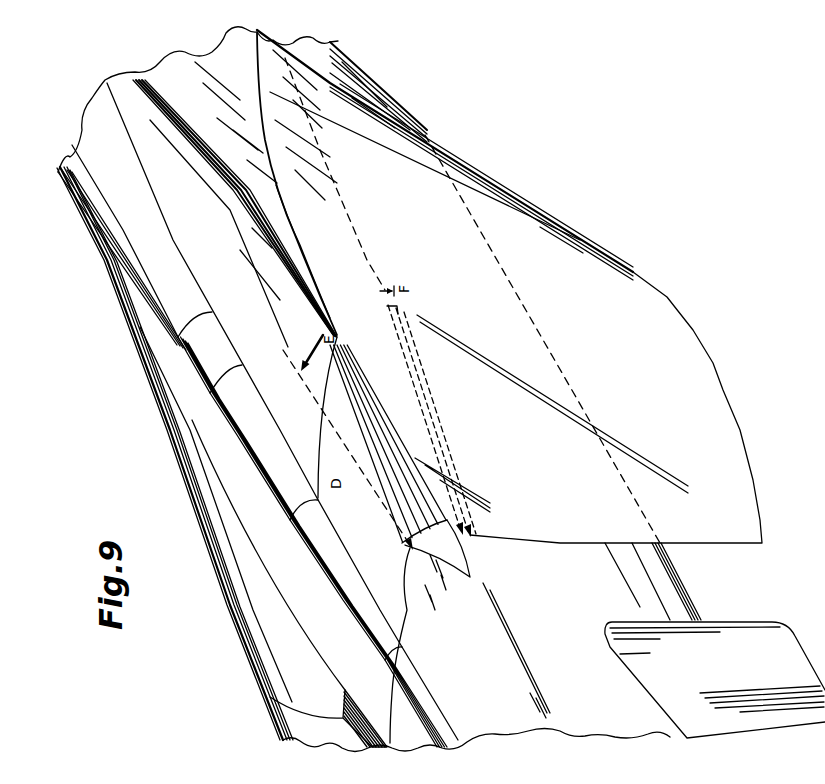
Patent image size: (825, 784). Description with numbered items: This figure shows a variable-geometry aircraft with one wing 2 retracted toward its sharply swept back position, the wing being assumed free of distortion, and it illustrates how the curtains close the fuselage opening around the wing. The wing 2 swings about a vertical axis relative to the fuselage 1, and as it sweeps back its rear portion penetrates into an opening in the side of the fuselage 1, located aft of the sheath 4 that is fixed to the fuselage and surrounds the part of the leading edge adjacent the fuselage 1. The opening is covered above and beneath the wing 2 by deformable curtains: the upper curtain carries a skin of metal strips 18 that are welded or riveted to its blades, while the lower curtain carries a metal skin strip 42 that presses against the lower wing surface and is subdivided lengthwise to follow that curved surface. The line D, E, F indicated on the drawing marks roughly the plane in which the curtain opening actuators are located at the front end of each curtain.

The fuselage 1 is at (203, 252).
The wing 2 is at (475, 176).
The sheath 4 is at (182, 78).
The metal strips 18 is at (434, 540).
The metal skin strip 42 is at (437, 423).